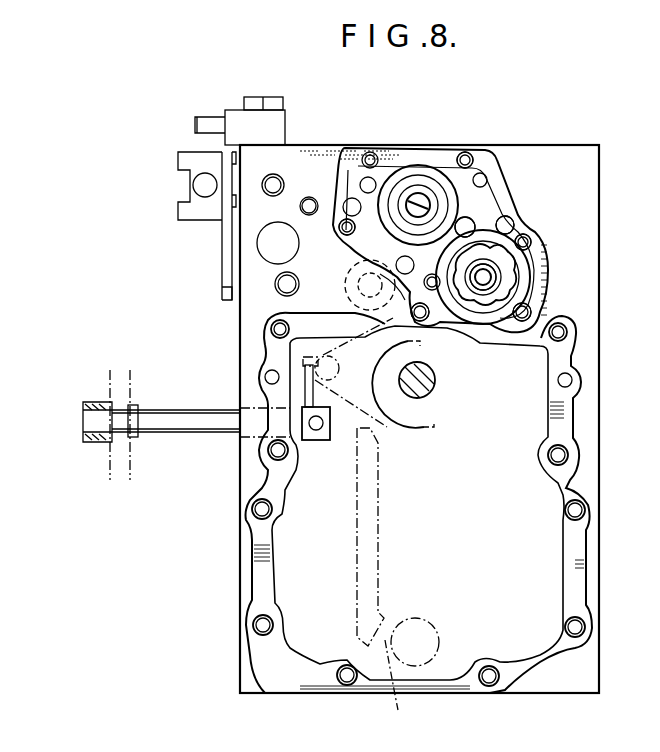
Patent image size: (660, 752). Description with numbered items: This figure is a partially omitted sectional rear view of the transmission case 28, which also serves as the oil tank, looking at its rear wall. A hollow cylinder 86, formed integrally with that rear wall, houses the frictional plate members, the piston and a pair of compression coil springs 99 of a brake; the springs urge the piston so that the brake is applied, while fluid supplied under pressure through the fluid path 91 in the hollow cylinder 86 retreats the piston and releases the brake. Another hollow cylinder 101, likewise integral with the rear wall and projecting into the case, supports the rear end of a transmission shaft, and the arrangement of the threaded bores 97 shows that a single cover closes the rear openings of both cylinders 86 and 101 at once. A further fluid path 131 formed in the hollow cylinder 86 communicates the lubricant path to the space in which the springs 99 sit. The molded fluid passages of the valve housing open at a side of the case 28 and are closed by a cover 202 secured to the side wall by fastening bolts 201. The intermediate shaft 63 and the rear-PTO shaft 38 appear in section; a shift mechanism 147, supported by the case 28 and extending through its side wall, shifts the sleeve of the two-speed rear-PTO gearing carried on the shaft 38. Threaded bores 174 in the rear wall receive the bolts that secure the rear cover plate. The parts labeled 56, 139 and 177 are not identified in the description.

The transmission case 28 is at (415, 523).
The rear-PTO shaft 38 is at (441, 405).
The shift fork 56 is at (400, 688).
The intermediate shaft 63 is at (352, 289).
The hollow cylinder 86 is at (505, 225).
The fluid path 91 is at (497, 248).
The threaded bores 97 is at (462, 155).
The compression coil springs 99 is at (495, 279).
The hollow cylinder 101 is at (420, 205).
The passage 131 is at (465, 227).
The pump housing 139 is at (365, 185).
The slider 147 is at (352, 448).
The threaded bores 174 is at (280, 330).
The opening 177 is at (433, 620).
The fastening bolts 201 is at (222, 158).
The cover 202 is at (232, 240).